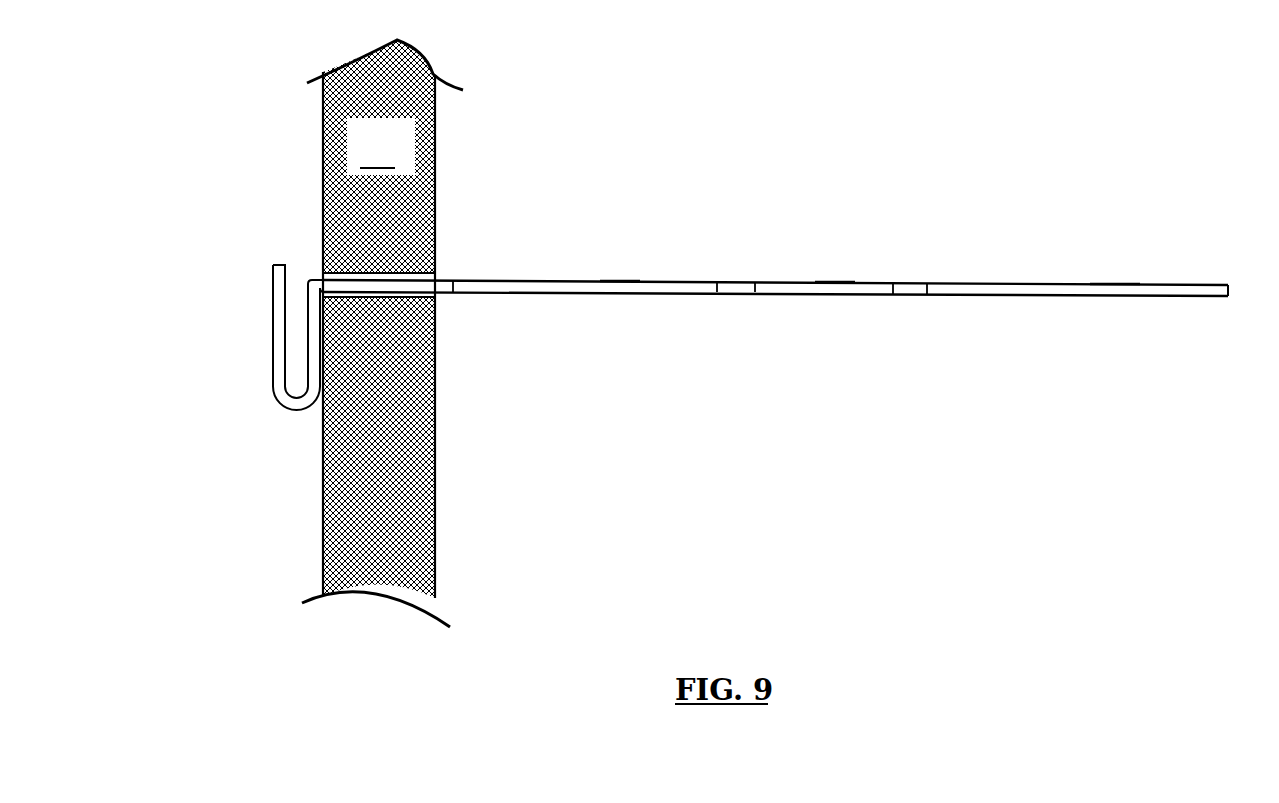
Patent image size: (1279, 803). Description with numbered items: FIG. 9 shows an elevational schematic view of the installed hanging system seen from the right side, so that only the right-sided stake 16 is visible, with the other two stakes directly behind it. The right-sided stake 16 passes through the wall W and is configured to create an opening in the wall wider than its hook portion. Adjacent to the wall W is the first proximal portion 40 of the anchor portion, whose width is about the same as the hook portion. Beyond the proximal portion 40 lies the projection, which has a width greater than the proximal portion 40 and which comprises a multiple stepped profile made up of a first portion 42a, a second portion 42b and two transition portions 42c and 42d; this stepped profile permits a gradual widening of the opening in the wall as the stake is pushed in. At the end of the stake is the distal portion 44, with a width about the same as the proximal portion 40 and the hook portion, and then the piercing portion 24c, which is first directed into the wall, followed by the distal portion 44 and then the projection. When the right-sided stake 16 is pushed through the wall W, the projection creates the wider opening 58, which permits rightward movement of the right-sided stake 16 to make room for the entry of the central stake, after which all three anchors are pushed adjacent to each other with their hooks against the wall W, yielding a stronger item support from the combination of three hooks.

The wall W is at (382, 333).
The right-sided stake 16 is at (270, 264).
The proximal portion 40 is at (405, 282).
The first portion 42a is at (622, 280).
The second portion 42b is at (836, 281).
The transition portion 42c is at (735, 281).
The transition portion 42d is at (915, 282).
The distal portion 44 is at (1115, 284).
The piercing portion 24c is at (1215, 284).
The opening 58 is at (425, 305).